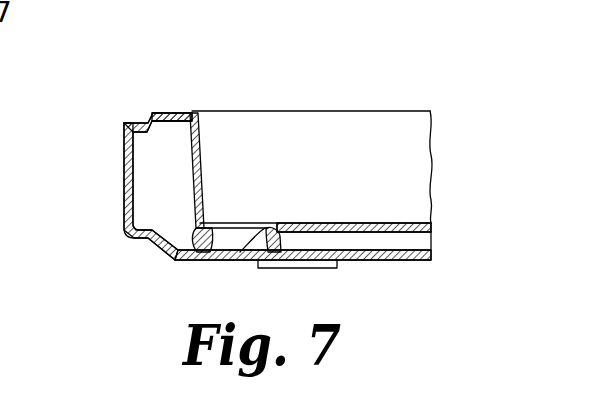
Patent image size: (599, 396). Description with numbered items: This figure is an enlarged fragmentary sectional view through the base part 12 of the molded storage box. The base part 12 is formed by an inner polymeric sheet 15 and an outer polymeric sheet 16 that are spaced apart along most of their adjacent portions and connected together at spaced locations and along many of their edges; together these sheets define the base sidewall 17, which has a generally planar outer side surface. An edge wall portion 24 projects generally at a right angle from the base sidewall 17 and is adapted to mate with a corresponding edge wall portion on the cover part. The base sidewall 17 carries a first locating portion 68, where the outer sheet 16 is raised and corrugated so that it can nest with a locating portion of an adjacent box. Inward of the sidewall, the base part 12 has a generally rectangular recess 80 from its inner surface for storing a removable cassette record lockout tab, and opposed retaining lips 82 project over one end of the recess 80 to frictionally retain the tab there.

The base part 12 is at (395, 106).
The inner polymeric sheet 15 is at (199, 137).
The outer polymeric sheet 16 is at (124, 165).
The base sidewall 17 is at (420, 261).
The edge wall portion 24 is at (124, 138).
The first locating portion 68 is at (337, 263).
The recess 80 is at (238, 231).
The retaining lip 82 is at (200, 250).